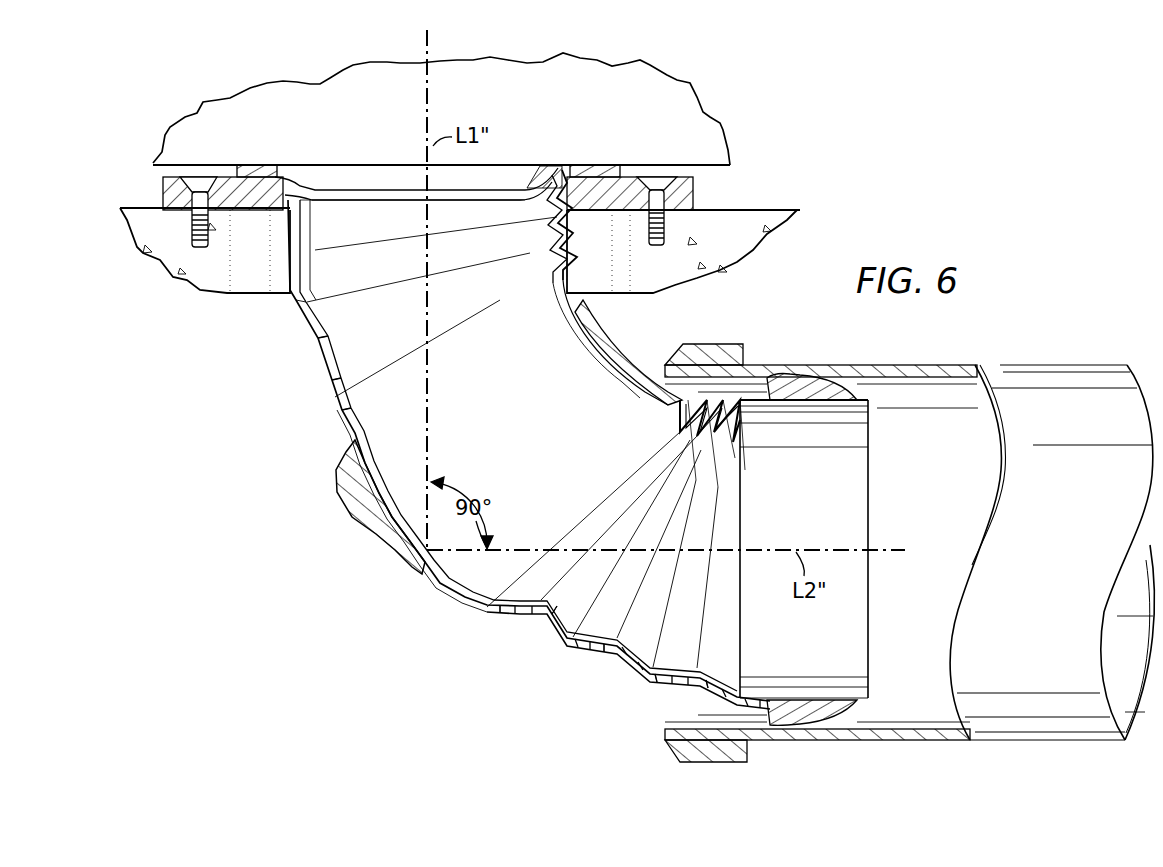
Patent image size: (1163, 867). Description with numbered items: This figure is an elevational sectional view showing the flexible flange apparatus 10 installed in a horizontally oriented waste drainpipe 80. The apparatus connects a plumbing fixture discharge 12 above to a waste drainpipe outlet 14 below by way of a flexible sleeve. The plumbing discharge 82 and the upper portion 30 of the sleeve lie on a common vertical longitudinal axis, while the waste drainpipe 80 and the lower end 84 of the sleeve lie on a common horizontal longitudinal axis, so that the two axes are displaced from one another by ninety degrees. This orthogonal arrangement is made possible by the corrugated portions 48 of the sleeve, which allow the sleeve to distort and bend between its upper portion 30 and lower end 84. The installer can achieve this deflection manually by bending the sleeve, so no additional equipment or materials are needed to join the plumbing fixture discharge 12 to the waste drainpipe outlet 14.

The flexible flange apparatus 10 is at (222, 415).
The plumbing fixture discharge 12 is at (490, 620).
The waste drainpipe outlet 14 is at (400, 570).
The upper portion 30 is at (598, 162).
The corrugated portion 48 is at (313, 328).
The waste drainpipe 80 is at (875, 745).
The plumbing discharge 82 is at (302, 84).
The lower end 84 is at (870, 490).